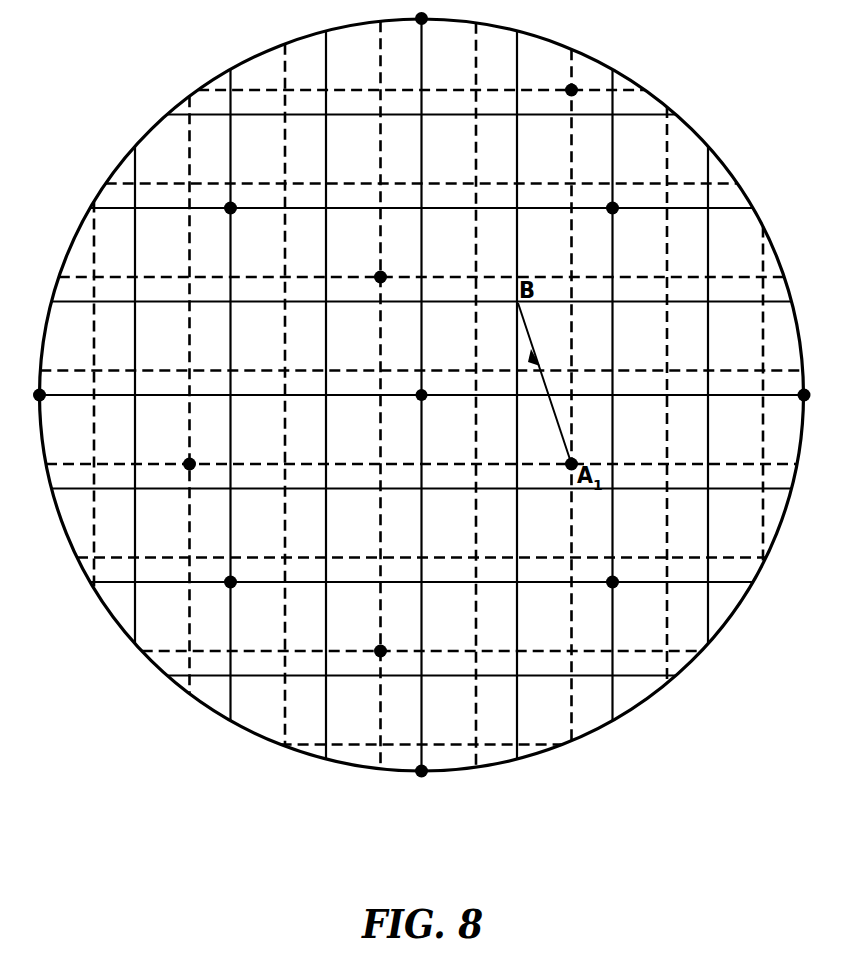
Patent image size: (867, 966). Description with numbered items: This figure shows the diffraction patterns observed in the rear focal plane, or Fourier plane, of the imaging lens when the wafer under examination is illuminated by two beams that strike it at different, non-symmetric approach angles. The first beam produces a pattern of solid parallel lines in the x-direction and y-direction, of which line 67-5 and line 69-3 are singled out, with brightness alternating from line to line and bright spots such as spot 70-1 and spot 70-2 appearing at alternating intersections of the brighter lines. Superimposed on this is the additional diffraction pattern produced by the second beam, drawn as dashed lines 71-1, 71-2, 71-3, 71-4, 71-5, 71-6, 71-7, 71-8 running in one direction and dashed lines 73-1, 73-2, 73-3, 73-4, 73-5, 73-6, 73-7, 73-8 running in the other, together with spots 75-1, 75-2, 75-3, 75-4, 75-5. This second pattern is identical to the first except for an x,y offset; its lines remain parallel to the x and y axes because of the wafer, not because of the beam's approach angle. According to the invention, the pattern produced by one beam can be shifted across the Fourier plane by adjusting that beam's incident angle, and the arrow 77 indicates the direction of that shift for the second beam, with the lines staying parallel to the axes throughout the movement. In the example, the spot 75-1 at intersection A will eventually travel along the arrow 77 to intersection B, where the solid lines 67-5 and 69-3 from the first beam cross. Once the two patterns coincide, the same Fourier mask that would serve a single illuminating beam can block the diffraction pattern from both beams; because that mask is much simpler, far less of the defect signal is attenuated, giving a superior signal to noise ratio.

The diffraction line 67-5 is at (545, 150).
The diffraction line 69-3 is at (642, 304).
The bright spot 70-1 is at (233, 207).
The bright spot 70-2 is at (233, 583).
The dashed line 71-1 is at (93, 324).
The dashed line 71-2 is at (190, 324).
The dashed line 71-3 is at (285, 324).
The dashed line 71-4 is at (382, 325).
The dashed line 71-5 is at (474, 228).
The dashed line 71-6 is at (570, 512).
The dashed line 71-7 is at (666, 537).
The dashed line 71-8 is at (762, 445).
The dashed line 73-1 is at (352, 90).
The dashed line 73-2 is at (352, 183).
The dashed line 73-3 is at (258, 276).
The dashed line 73-4 is at (352, 370).
The dashed line 73-5 is at (352, 463).
The dashed line 73-6 is at (352, 557).
The dashed line 73-7 is at (352, 650).
The dashed line 73-8 is at (352, 744).
The diffraction spot 75-1 is at (572, 464).
The spot 75-2 is at (189, 463).
The spot 75-3 is at (380, 277).
The spot 75-4 is at (382, 651).
The spot 75-5 is at (570, 90).
The arrow 77 is at (524, 320).